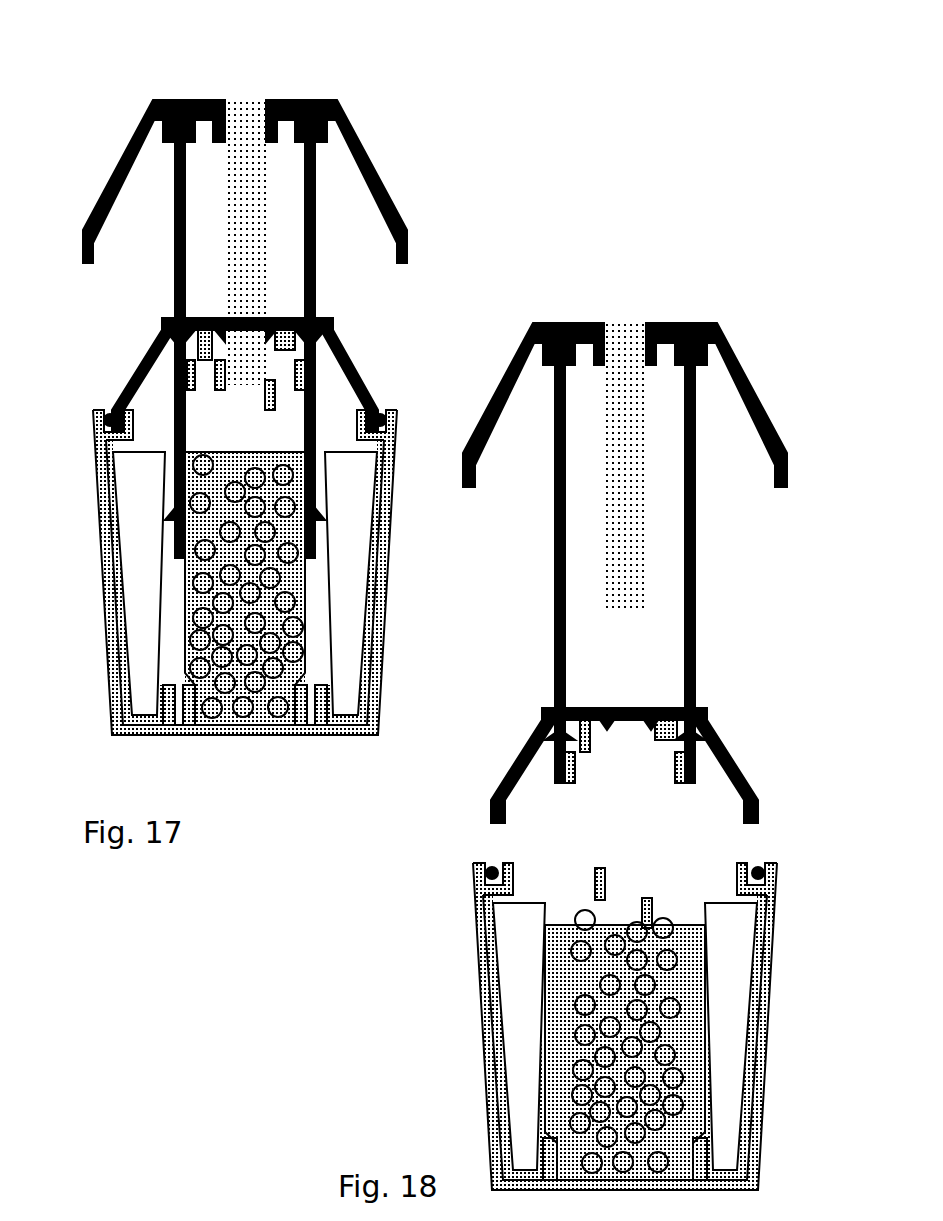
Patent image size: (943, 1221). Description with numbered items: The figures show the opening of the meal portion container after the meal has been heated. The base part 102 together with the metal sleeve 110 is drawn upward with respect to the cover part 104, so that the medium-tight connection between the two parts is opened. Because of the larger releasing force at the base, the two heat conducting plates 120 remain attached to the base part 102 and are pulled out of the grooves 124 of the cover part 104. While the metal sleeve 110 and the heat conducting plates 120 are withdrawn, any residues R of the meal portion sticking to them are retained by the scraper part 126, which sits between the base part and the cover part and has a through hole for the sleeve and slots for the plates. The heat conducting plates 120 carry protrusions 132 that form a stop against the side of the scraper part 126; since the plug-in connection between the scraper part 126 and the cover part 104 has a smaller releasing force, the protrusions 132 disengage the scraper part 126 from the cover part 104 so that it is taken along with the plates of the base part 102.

In FIG. 17, the base part 102 is at (118, 182).
In FIG. 18, the base part 102 is at (735, 368).
In FIG. 17, the metal sleeve 110 is at (242, 122).
In FIG. 18, the metal sleeve 110 is at (625, 466).
In FIG. 17, the heat conducting plates 120 is at (175, 258).
In FIG. 18, the heat conducting plates 120 is at (697, 595).
In FIG. 17, the scraper part 126 is at (137, 378).
In FIG. 18, the scraper part 126 is at (533, 730).
In FIG. 17, the residues R is at (285, 345).
In FIG. 17, the cover part 104 is at (110, 663).
In FIG. 18, the cover part 104 is at (482, 978).
In FIG. 17, the grooves 124 is at (182, 703).
In FIG. 18, the protrusions 132 is at (687, 742).